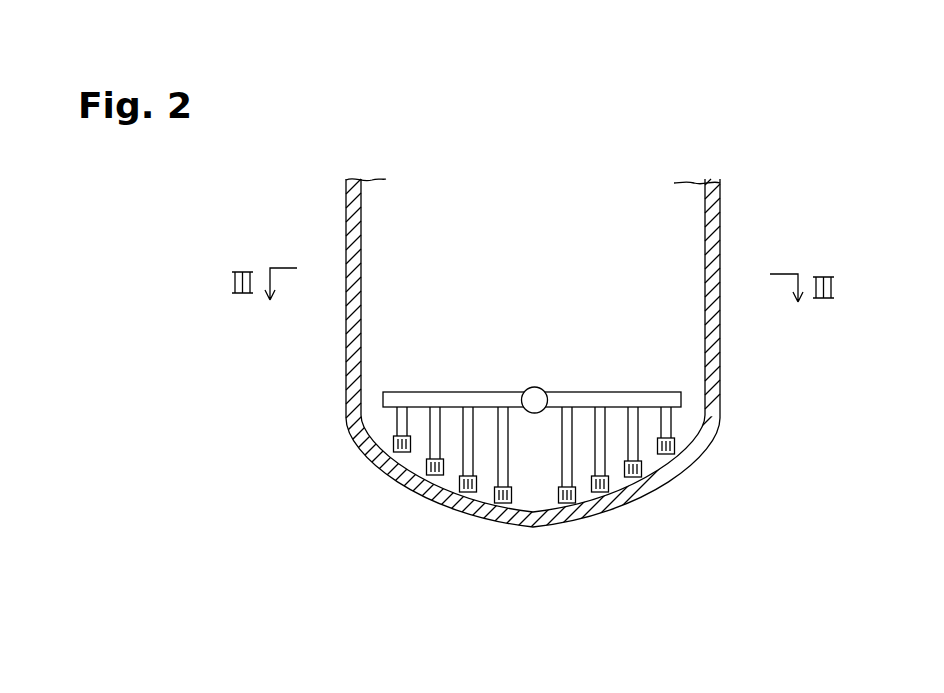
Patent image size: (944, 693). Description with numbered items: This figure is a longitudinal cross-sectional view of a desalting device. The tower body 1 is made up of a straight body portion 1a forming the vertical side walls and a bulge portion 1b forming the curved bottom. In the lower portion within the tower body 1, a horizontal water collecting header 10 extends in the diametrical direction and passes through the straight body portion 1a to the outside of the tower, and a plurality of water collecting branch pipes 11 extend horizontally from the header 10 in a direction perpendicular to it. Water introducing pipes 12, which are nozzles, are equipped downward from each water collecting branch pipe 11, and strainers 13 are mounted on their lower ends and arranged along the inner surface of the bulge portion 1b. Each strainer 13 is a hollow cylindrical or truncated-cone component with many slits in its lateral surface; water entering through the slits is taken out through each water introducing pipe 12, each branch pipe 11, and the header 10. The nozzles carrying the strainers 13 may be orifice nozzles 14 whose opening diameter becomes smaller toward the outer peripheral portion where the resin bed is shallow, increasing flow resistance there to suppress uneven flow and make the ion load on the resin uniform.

The tower body 1 is at (343, 240).
The straight body portion 1a is at (346, 298).
The bulge portion 1b is at (447, 505).
The water collecting header 10 is at (538, 387).
The water collecting branch pipe 11 is at (448, 392).
The water introducing pipe 12 is at (397, 428).
The strainer 13 is at (397, 452).
The orifice nozzle 14 is at (408, 453).